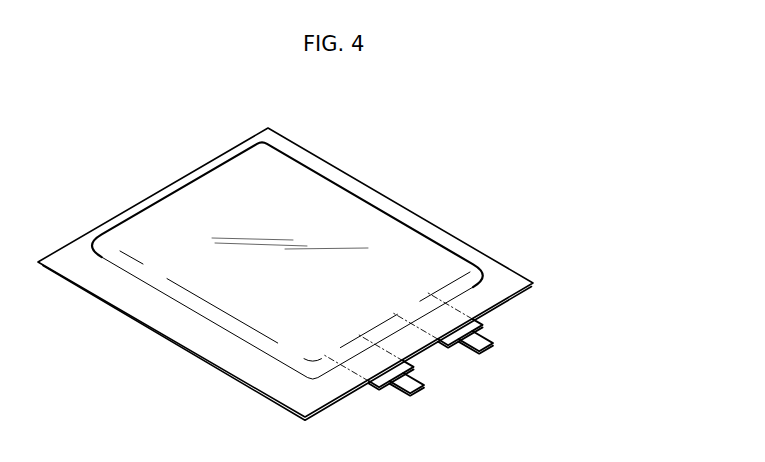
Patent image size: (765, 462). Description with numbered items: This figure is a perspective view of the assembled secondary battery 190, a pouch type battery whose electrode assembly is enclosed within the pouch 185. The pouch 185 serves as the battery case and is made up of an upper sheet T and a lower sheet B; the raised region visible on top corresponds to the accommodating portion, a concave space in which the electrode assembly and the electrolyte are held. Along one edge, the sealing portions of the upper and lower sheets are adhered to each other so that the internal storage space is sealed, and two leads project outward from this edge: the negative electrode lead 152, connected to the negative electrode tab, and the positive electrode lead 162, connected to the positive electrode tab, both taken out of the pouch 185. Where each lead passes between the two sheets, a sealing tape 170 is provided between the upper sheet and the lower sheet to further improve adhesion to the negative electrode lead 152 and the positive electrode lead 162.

The secondary battery 190 is at (460, 160).
The pouch 185 is at (520, 270).
The negative electrode lead 152 is at (415, 383).
The positive electrode lead 162 is at (482, 345).
The sealing tape 170 is at (376, 387).